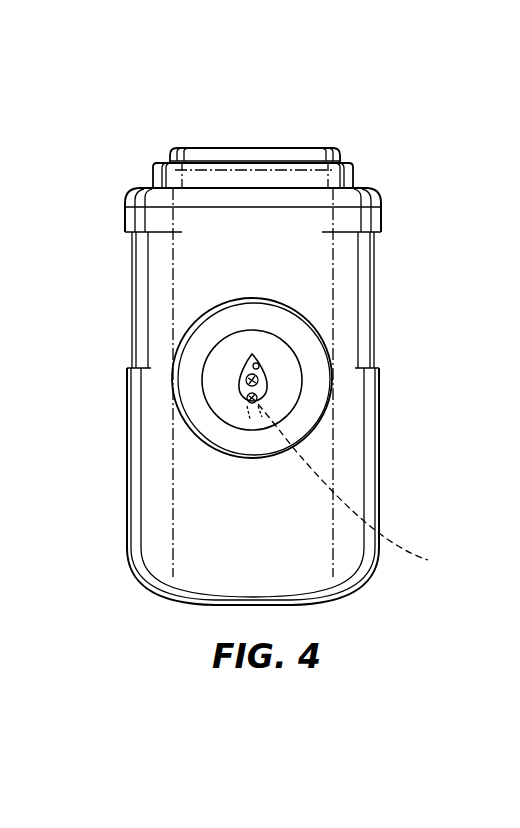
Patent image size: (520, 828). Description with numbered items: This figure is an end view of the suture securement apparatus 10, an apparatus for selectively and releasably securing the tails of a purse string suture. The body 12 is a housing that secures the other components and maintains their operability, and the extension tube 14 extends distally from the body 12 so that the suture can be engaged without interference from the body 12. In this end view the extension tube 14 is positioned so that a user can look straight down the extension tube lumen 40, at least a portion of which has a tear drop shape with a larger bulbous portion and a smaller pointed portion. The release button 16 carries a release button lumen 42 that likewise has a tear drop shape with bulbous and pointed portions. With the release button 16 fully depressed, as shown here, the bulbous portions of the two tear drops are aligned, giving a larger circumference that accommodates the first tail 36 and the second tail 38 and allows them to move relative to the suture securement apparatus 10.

The suture securement apparatus 10 is at (297, 357).
The body 12 is at (340, 263).
The extension tube 14 is at (175, 398).
The release button 16 is at (220, 153).
The first tail 36 is at (243, 402).
The second tail 38 is at (243, 380).
The extension tube lumen 40 is at (258, 358).
The release button lumen 42 is at (355, 487).